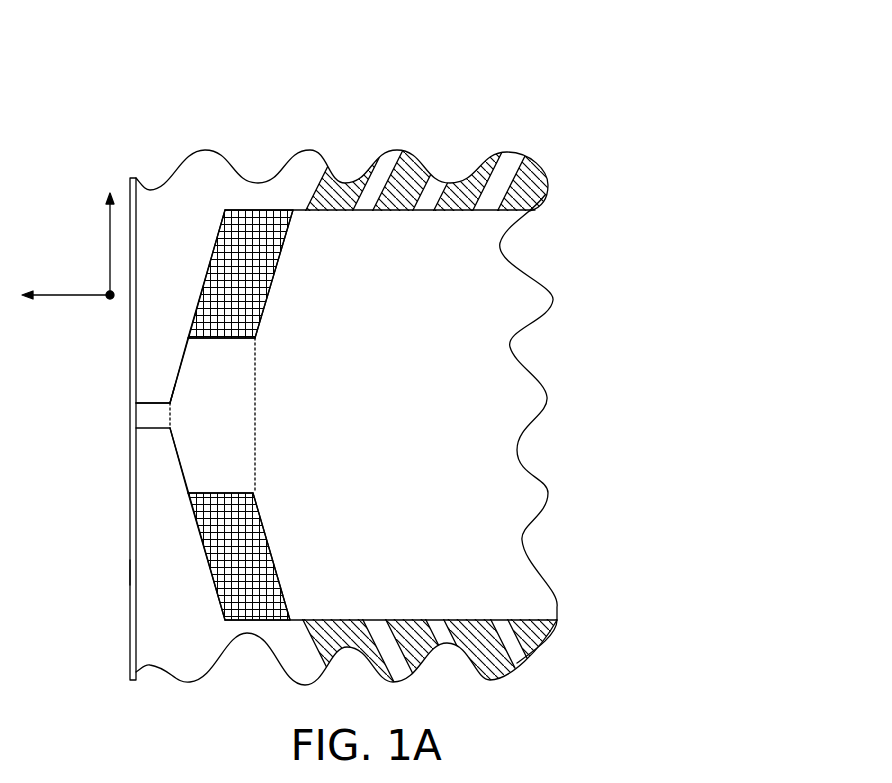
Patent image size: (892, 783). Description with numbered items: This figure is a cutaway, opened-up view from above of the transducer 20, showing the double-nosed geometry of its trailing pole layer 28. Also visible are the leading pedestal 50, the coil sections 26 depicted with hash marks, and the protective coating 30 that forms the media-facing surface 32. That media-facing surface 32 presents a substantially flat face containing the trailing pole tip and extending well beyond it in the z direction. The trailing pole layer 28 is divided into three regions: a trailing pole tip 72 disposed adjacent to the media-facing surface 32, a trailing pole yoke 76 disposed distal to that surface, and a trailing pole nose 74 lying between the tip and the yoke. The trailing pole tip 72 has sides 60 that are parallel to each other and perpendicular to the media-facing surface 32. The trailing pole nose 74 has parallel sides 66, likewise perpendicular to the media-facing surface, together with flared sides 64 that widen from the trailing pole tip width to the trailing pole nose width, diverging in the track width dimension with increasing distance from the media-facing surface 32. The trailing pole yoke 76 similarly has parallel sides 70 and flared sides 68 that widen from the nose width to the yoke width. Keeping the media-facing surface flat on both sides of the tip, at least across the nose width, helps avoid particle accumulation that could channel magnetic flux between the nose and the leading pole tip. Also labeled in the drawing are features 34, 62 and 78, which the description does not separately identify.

The transducer 20 is at (373, 62).
The coil sections 26 is at (403, 178).
The trailing pole layer 28 is at (497, 377).
The protective coating 30 is at (130, 624).
The media-facing surface 32 is at (128, 571).
The opening 34 is at (142, 410).
The leading pedestal 50 is at (252, 262).
The sides of trailing pole tip 60 is at (150, 400).
The wall segment 62 is at (170, 397).
The flared sides of trailing pole nose 64 is at (186, 347).
The parallel sides of trailing pole nose 66 is at (214, 331).
The flared sides of trailing pole yoke 68 is at (278, 237).
The parallel sides of trailing pole yoke 70 is at (362, 209).
The trailing pole tip 72 is at (146, 418).
The trailing pole nose 74 is at (218, 458).
The trailing pole yoke 76 is at (305, 603).
The interface 78 is at (253, 335).